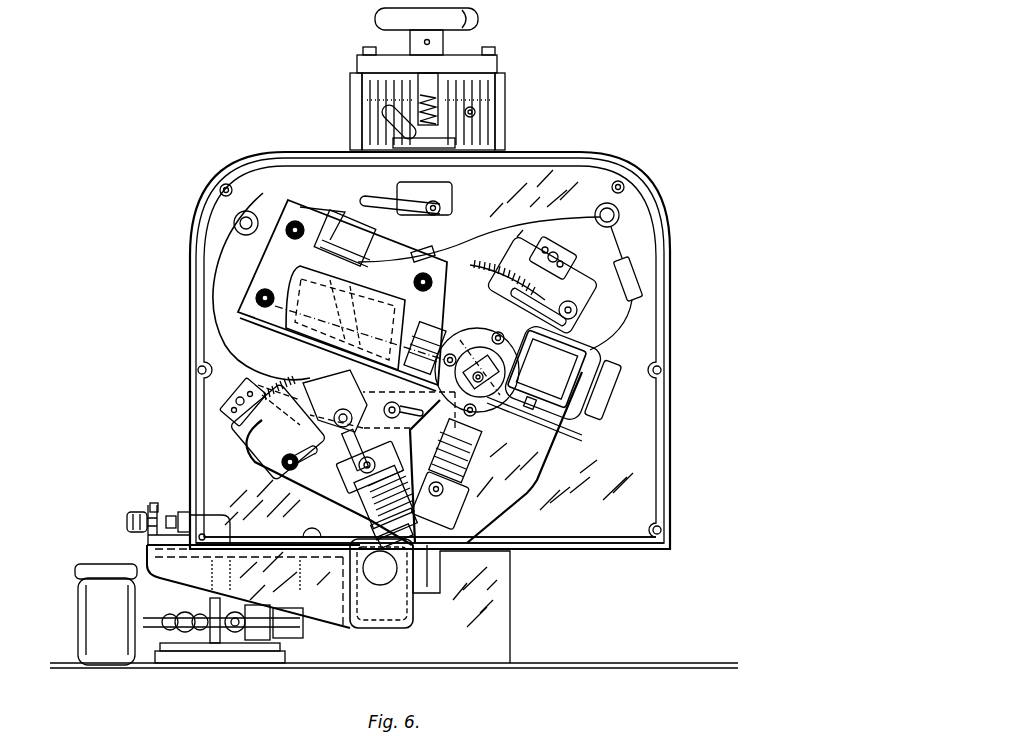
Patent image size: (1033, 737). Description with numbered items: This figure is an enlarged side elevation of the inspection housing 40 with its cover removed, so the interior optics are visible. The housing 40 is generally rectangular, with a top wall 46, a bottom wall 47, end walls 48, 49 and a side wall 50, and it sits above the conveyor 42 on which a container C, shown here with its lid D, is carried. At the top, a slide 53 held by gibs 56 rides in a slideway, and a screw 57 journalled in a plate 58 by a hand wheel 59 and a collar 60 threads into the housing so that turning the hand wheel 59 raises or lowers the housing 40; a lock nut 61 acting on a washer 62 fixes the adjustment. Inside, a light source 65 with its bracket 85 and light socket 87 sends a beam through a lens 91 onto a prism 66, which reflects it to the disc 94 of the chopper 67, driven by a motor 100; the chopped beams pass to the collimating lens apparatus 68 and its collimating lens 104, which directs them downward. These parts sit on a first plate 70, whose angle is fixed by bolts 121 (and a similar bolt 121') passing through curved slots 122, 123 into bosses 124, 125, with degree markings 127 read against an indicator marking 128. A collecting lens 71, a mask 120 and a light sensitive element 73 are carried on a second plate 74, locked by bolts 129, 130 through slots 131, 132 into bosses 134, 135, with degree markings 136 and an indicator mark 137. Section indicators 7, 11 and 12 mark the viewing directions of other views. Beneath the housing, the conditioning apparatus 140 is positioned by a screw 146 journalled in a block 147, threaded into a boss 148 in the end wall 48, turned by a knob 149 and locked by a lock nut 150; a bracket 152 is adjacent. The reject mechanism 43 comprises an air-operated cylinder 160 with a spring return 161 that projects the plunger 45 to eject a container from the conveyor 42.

The housing 40 is at (605, 155).
The conveyor 42 is at (655, 665).
The reject mechanism 43 is at (282, 664).
The plunger 45 is at (348, 626).
The top wall 46 is at (532, 153).
The bottom wall 47 is at (578, 540).
The end wall 48 is at (190, 307).
The end wall 49 is at (665, 452).
The side wall 50 is at (640, 420).
The slide 53 is at (470, 88).
The gibs 56 is at (358, 88).
The screw 57 is at (478, 110).
The plate 58 is at (447, 63).
The hand wheel 59 is at (376, 18).
The collar 60 is at (418, 86).
The lock nut 61 is at (440, 135).
The washer 62 is at (455, 150).
The light source 65 is at (285, 270).
The prism 66 is at (474, 348).
The chopper 67 is at (574, 445).
The collimating lens apparatus 68 is at (478, 478).
The plate 70 is at (439, 357).
The collecting lens 71 is at (364, 514).
The light sensitive element 73 is at (300, 418).
The plate 74 is at (258, 492).
The bracket 85 is at (378, 236).
The light socket 87 is at (300, 212).
The lens 91 is at (430, 326).
The disc 94 is at (528, 425).
The motor 100 is at (552, 372).
The collimating lens 104 is at (468, 446).
The mask 120 is at (390, 487).
The bolts 121 is at (314, 502).
The pivot screw 121' is at (521, 259).
The slot 122 is at (390, 205).
The slot 123 is at (510, 292).
The boss 124 is at (440, 187).
The boss 125 is at (558, 250).
The degree markings 127 is at (486, 268).
The indicator marking 128 is at (548, 265).
The bolt 129 is at (288, 468).
The bolt 130 is at (388, 402).
The slot 131 is at (350, 460).
The slot 132 is at (421, 419).
The boss 134 is at (222, 406).
The boss 135 is at (410, 440).
The degree markings 136 is at (268, 392).
The indicator mark 137 is at (222, 443).
The conditioning apparatus 140 is at (170, 556).
The screw 146 is at (150, 506).
The block 147 is at (150, 538).
The boss 148 is at (185, 512).
The knob 149 is at (127, 520).
The lock nut 150 is at (172, 516).
The bracket 152 is at (392, 605).
The air-operated cylinder 160 is at (222, 640).
The spring return 161 is at (200, 632).
The section line 7 is at (255, 252).
The section line 11 is at (297, 355).
The section line 12 is at (458, 316).
The container C is at (92, 621).
The lid D is at (78, 568).